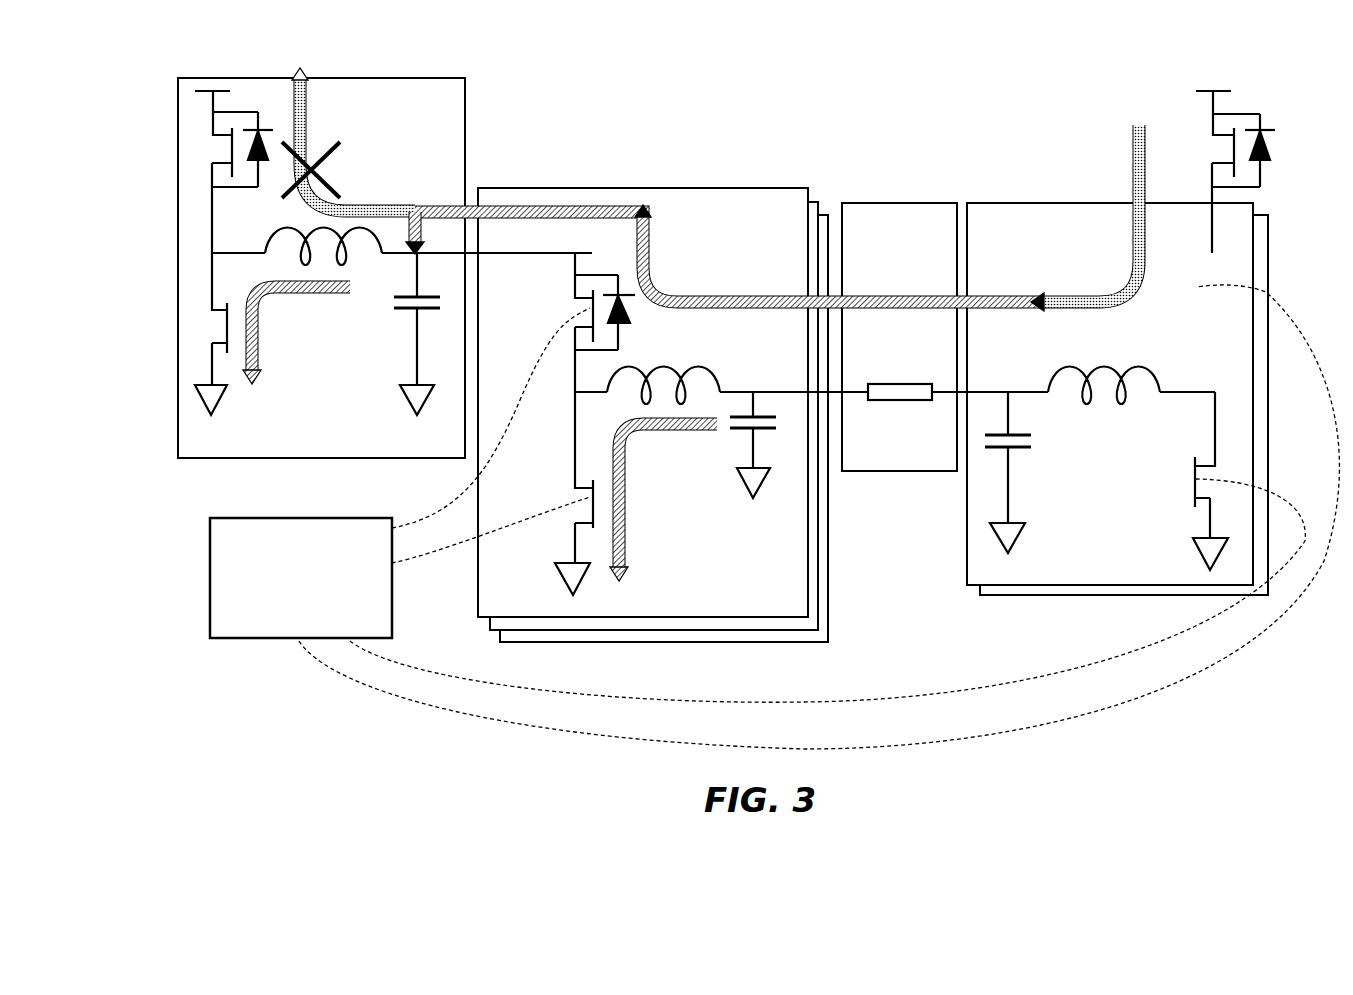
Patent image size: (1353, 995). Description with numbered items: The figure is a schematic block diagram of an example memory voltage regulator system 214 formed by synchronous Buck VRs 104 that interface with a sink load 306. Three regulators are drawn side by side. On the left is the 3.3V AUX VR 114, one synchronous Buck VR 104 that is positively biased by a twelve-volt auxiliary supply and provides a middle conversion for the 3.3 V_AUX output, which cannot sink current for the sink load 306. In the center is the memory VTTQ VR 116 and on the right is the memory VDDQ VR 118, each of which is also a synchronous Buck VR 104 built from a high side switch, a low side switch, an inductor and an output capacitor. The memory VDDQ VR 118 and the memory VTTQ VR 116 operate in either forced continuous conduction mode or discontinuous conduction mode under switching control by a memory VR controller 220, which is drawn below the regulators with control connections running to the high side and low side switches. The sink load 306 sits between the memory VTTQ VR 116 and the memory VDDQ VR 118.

The memory voltage regulator system 214 is at (808, 57).
The synchronous Buck VR 104 is at (410, 96).
The 3.3V AUX VR 114 is at (350, 78).
The memory VTTQ VR 116 is at (722, 188).
The memory VDDQ VR 118 is at (1015, 203).
The sink load 306 is at (884, 203).
The memory VR controller 220 is at (774, 517).